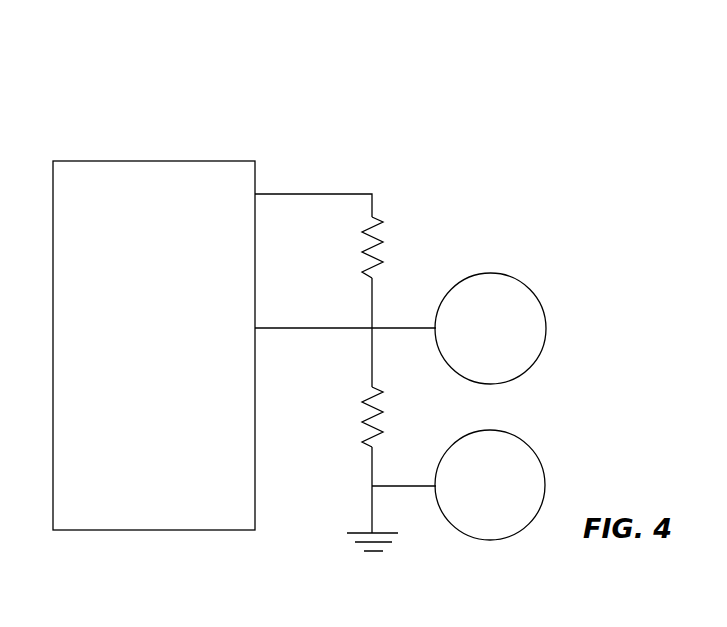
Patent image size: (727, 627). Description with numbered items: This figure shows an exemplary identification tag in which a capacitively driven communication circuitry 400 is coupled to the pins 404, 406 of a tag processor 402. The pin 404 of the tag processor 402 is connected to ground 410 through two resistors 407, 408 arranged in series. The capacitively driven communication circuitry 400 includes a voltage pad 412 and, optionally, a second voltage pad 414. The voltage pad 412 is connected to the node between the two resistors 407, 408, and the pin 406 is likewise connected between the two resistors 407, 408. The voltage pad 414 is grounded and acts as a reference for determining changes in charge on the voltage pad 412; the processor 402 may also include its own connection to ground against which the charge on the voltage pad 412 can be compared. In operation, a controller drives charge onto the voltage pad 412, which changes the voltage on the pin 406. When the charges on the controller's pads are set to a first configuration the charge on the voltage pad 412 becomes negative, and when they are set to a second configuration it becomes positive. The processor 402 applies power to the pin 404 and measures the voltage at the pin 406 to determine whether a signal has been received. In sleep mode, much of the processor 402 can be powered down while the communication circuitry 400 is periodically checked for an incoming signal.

The capacitively driven communication circuitry 400 is at (316, 66).
The tag processor 402 is at (120, 161).
The pin 404 is at (255, 194).
The pin 406 is at (255, 330).
The resistor 407 is at (385, 222).
The resistor 408 is at (384, 404).
The ground 410 is at (343, 533).
The voltage pad 412 is at (521, 283).
The voltage pad 414 is at (539, 458).